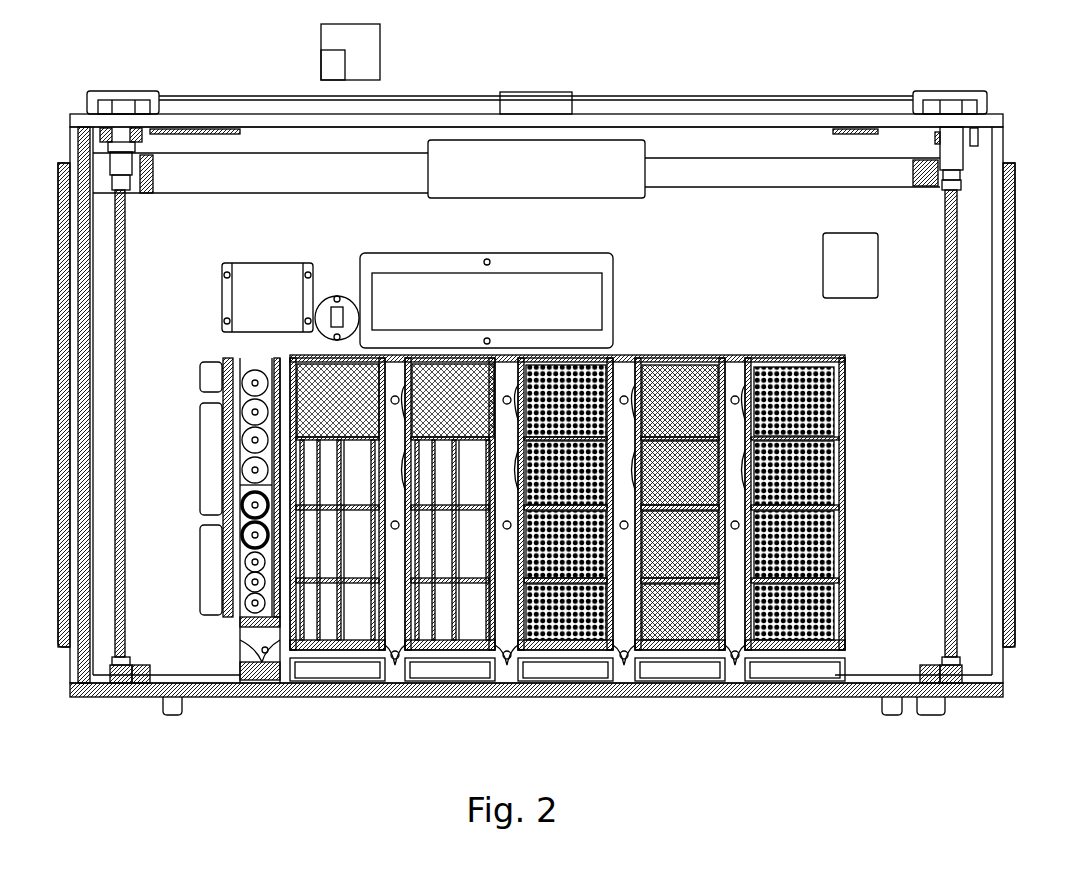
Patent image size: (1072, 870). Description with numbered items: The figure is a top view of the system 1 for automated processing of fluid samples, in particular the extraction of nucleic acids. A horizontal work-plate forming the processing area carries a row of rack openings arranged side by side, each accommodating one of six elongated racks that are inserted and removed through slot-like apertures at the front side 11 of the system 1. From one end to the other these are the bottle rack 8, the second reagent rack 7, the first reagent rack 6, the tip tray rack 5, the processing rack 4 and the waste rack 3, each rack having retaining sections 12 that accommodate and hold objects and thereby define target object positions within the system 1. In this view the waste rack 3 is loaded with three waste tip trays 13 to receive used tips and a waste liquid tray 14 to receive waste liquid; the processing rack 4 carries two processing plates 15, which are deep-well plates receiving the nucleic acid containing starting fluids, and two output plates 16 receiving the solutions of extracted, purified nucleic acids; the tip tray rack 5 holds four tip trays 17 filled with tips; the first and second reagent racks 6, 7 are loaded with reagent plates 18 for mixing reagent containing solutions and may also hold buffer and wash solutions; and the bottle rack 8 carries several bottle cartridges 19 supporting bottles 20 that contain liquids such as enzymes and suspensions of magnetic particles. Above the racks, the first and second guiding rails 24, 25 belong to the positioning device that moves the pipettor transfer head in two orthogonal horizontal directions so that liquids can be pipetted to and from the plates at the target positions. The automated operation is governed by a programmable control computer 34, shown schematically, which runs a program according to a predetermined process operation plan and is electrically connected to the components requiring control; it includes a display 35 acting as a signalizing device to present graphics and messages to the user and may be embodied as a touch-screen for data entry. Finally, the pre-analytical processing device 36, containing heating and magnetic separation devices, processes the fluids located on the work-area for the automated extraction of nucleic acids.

The system 1 is at (62, 746).
The waste rack 3 is at (788, 672).
The processing rack 4 is at (650, 672).
The tip tray rack 5 is at (543, 672).
The first reagent rack 6 is at (455, 672).
The second reagent rack 7 is at (348, 672).
The bottle rack 8 is at (255, 672).
The front side 11 is at (850, 697).
The retaining sections 12 is at (378, 476).
The waste tip trays 13 is at (836, 463).
The waste liquid tray 14 is at (836, 391).
The processing plates 15 is at (690, 390).
The output plates 16 is at (700, 550).
The tip trays 17 is at (560, 374).
The reagent plates 18 is at (370, 382).
The bottle cartridges 19 is at (242, 438).
The bottles 20 is at (250, 563).
The first guiding rail 24 is at (760, 170).
The second guiding rail 25 is at (953, 320).
The control computer 34 is at (381, 45).
The display 35 is at (330, 72).
The pre-analytical processing device 36 is at (838, 277).